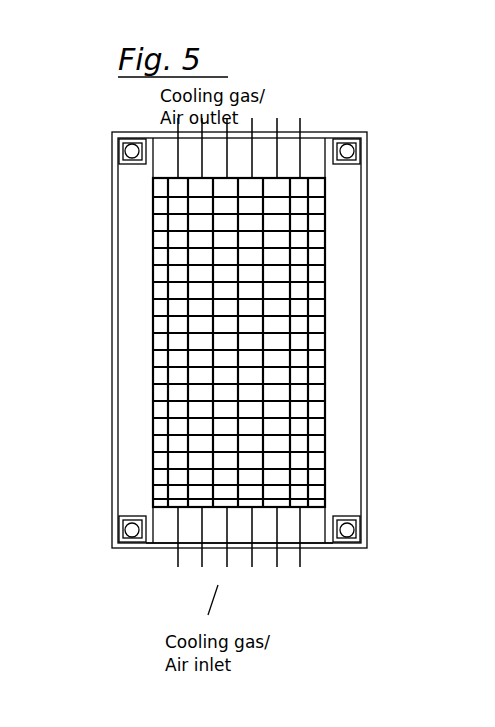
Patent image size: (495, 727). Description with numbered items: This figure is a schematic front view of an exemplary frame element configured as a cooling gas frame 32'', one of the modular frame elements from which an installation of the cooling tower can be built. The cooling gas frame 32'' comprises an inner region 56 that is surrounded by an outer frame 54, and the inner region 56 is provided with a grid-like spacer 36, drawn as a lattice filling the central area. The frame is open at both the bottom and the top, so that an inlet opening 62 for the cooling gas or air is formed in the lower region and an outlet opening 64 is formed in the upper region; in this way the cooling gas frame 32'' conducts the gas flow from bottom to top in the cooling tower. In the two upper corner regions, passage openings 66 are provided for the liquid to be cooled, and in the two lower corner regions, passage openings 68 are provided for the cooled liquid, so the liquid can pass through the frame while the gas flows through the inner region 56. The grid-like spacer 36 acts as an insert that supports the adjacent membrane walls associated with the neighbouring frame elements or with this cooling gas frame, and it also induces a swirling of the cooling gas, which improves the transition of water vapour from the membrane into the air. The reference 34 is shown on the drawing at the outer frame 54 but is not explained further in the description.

The cooling gas frame 32'' is at (231, 327).
The housing frame 34 is at (366, 200).
The grid-like spacer 36 is at (312, 290).
The outer frame 54 is at (343, 238).
The inner region 56 is at (180, 340).
The inlet opening 62 is at (168, 548).
The outlet opening 64 is at (304, 133).
The passage openings 66 is at (340, 152).
The passage openings 68 is at (122, 548).